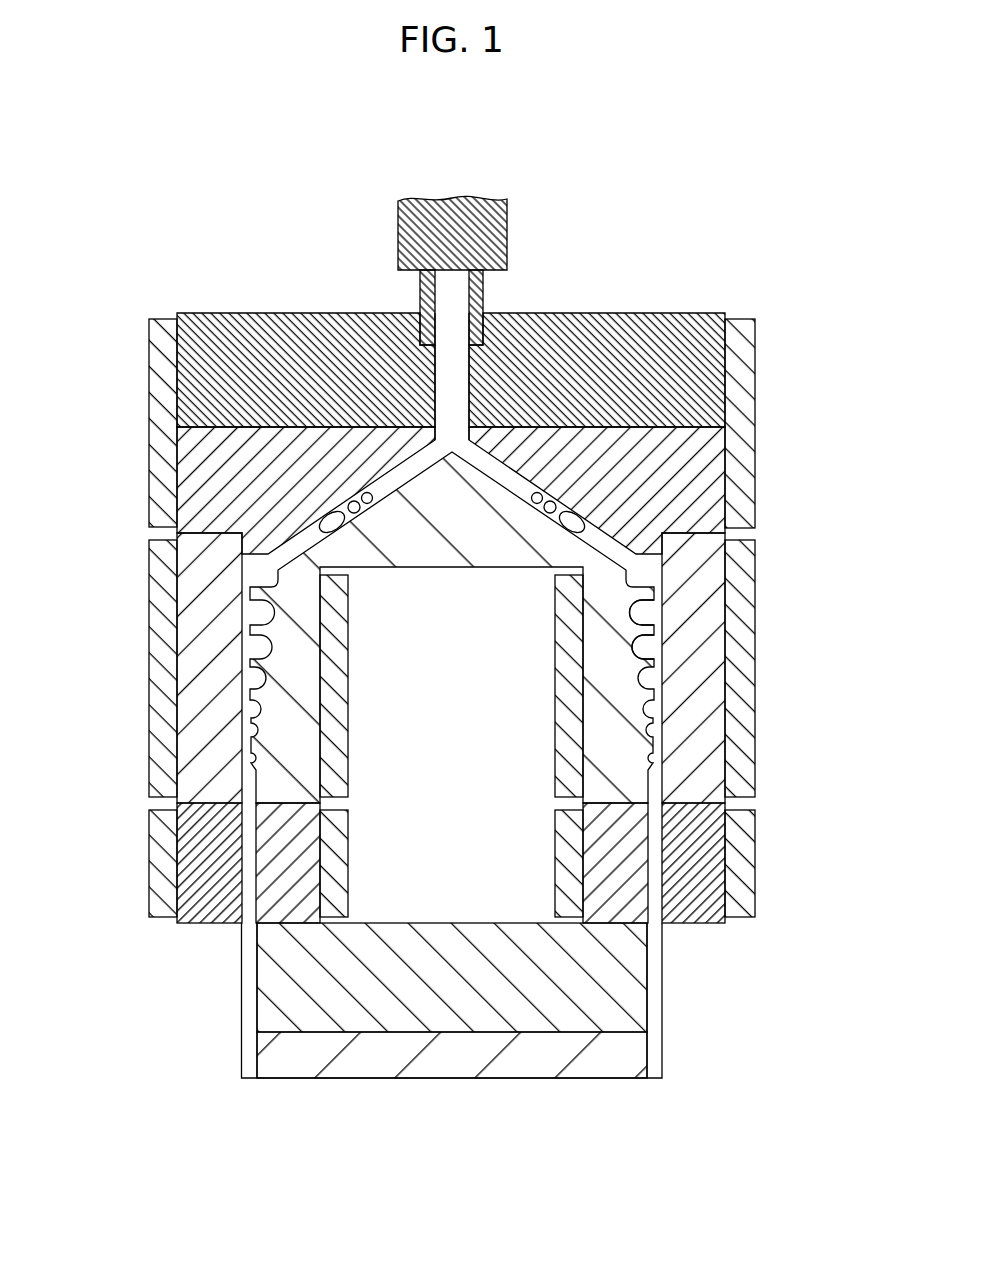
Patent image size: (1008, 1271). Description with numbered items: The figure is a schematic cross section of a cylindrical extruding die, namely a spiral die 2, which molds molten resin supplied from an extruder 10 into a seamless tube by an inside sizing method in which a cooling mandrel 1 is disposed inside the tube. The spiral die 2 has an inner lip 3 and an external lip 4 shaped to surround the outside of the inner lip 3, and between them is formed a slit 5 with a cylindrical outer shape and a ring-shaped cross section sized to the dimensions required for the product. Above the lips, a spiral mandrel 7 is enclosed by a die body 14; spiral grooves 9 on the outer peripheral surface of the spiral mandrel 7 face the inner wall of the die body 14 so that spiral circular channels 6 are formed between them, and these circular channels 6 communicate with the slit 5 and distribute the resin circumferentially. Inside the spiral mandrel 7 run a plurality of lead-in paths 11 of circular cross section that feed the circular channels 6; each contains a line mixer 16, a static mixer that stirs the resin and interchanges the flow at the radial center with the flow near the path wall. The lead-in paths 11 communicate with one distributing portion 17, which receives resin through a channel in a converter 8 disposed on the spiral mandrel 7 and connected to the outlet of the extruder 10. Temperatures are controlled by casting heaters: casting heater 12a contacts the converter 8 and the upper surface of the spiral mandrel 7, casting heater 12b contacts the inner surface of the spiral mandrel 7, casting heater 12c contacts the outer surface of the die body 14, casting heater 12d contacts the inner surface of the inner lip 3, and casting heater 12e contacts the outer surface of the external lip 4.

The cooling mandrel 1 is at (608, 988).
The spiral die 2 is at (757, 302).
The inner lip 3 is at (257, 890).
The external lip 4 is at (207, 856).
The slit 5 is at (658, 942).
The circular channels 6 is at (646, 613).
The spiral mandrel 7 is at (742, 442).
The converter 8 is at (670, 346).
The spiral grooves 9 is at (638, 650).
The extruder 10 is at (480, 232).
The lead-in paths 11 is at (505, 477).
The casting heater 12a is at (162, 485).
The casting heater 12b is at (570, 700).
The casting heater 12c is at (162, 597).
The casting heater 12d is at (570, 847).
The casting heater 12e is at (162, 822).
The die body 14 is at (218, 677).
The line mixer 16 is at (338, 493).
The distributing portion 17 is at (452, 437).